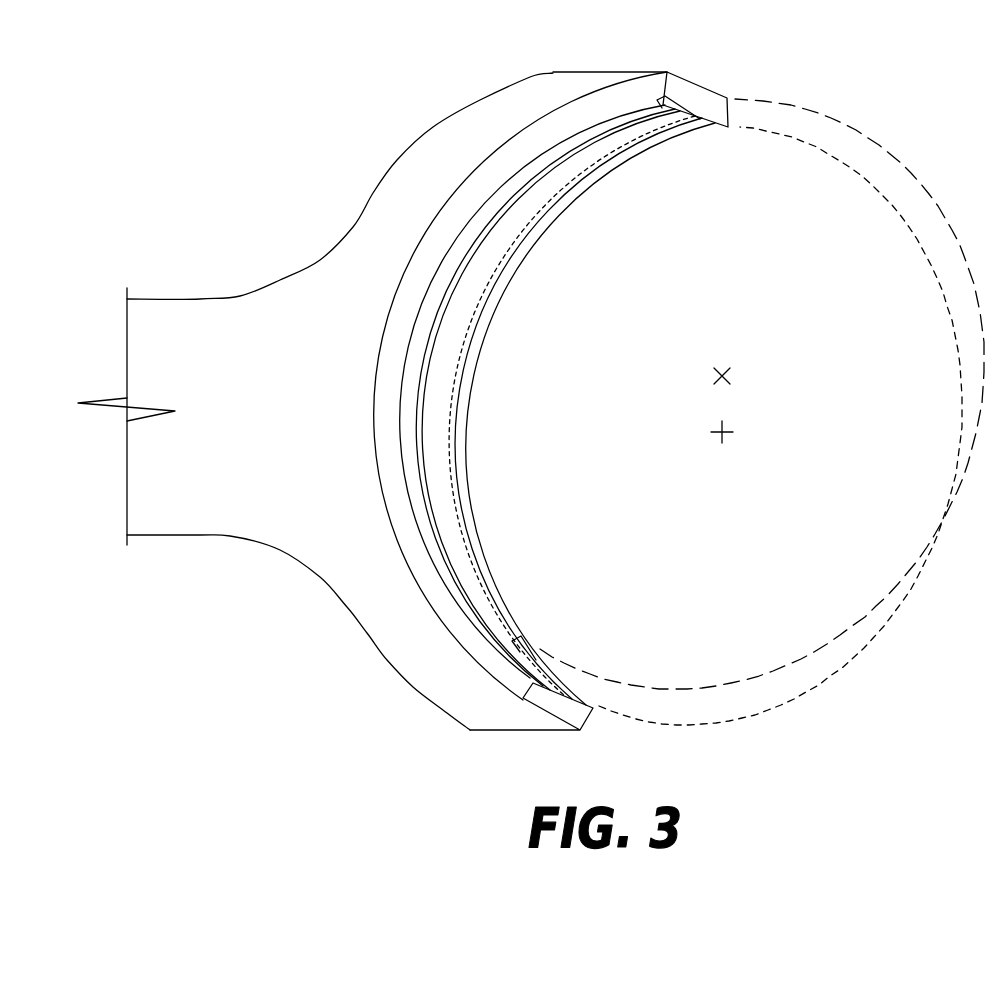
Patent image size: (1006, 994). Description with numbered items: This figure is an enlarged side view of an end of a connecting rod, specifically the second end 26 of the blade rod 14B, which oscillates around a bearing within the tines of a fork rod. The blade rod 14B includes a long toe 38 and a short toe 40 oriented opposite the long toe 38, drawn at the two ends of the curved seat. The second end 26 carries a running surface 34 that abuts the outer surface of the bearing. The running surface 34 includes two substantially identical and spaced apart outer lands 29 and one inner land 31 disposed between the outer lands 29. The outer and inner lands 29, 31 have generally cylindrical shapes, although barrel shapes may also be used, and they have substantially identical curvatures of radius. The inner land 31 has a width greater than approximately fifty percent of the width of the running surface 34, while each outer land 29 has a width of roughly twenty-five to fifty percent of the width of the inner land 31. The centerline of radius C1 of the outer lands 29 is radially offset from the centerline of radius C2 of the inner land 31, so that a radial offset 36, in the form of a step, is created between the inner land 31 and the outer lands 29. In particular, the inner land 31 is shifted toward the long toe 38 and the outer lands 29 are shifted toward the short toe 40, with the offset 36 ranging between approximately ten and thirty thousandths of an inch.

The blade rod 14B is at (200, 330).
The second end of blade rod 26 is at (433, 130).
The long toe 38 is at (550, 70).
The radial offset 36 is at (655, 103).
The running surface 34 is at (506, 287).
The outer lands 29 is at (460, 408).
The inner land 31 is at (428, 438).
The short toe 40 is at (478, 710).
The centerline of radius of outer lands C1 is at (716, 440).
The centerline of radius of inner land C2 is at (718, 368).